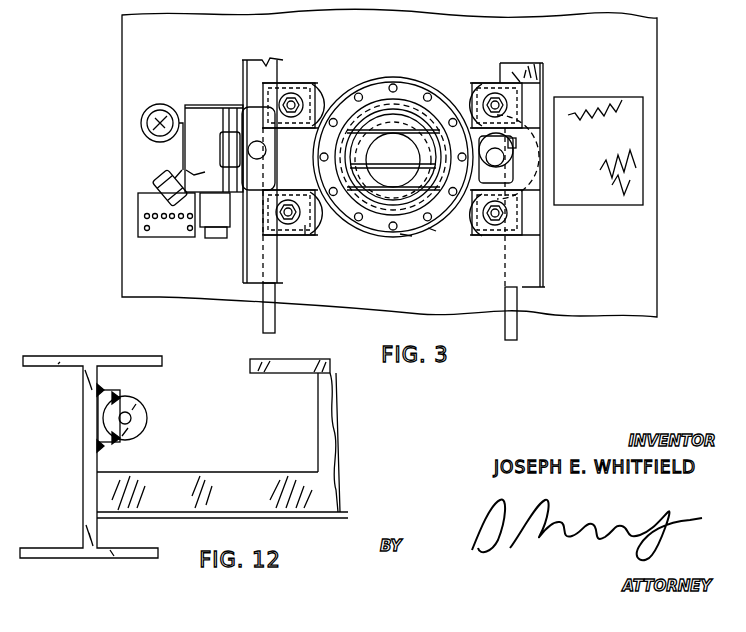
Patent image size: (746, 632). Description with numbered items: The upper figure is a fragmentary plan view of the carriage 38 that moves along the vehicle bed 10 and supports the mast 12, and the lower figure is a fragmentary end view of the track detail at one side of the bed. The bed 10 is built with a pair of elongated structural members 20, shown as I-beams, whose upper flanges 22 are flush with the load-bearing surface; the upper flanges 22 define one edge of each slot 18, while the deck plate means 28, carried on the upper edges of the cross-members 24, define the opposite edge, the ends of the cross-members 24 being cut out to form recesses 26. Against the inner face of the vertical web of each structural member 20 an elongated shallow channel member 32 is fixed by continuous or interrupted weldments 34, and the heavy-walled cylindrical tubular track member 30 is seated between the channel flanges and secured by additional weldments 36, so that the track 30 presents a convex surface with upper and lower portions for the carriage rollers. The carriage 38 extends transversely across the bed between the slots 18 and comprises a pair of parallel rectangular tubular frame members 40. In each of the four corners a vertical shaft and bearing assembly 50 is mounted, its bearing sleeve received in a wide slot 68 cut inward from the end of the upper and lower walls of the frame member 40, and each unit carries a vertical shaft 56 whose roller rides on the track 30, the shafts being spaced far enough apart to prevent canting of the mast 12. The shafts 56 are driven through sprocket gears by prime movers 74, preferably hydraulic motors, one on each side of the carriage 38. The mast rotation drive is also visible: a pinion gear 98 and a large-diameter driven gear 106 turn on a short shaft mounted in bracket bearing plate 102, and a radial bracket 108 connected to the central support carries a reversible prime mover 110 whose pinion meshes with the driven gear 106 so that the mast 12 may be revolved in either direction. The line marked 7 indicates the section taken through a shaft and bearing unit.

In FIG. 3, the line 7 is at (306, 228).
In FIG. 3, the vehicle bed 10 is at (654, 283).
In FIG. 3, the mast 12 is at (404, 100).
In FIG. 12, the slots 18 is at (218, 383).
In FIG. 3, the structural members 20 is at (252, 268).
In FIG. 12, the structural members 20 is at (83, 427).
In FIG. 12, the upper flanges 22 is at (50, 362).
In FIG. 12, the cross-members 24 is at (310, 512).
In FIG. 12, the recesses 26 is at (278, 378).
In FIG. 12, the deck plate means 28 is at (335, 360).
In FIG. 3, the tubular track members 30 is at (263, 312).
In FIG. 12, the tubular track members 30 is at (143, 423).
In FIG. 12, the channel member 32 is at (97, 413).
In FIG. 12, the weldments 34 is at (99, 388).
In FIG. 12, the weldments 36 is at (120, 398).
In FIG. 3, the carriage 38 is at (347, 75).
In FIG. 3, the frame members 40 is at (451, 88).
In FIG. 3, the shaft and bearing assemblies 50 is at (305, 74).
In FIG. 3, the shaft 56 is at (292, 97).
In FIG. 3, the slots 68 is at (317, 94).
In FIG. 3, the prime mover 74 is at (561, 130).
In FIG. 3, the pinion gear 98 is at (516, 162).
In FIG. 3, the bracket bearing plate 102 is at (516, 172).
In FIG. 3, the driven gear 106 is at (543, 156).
In FIG. 3, the radial bracket 108 is at (409, 236).
In FIG. 3, the prime mover 110 is at (432, 230).